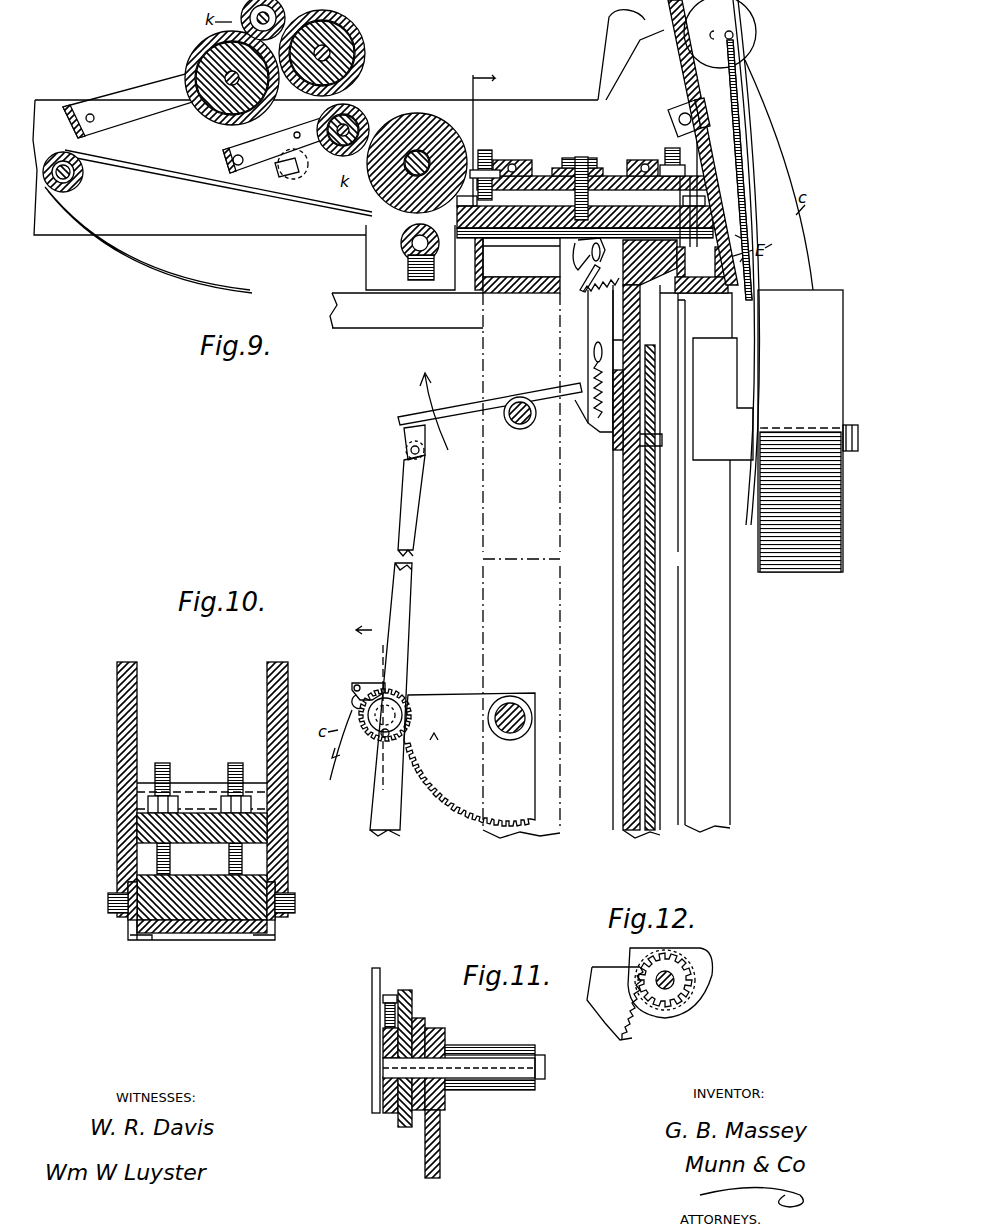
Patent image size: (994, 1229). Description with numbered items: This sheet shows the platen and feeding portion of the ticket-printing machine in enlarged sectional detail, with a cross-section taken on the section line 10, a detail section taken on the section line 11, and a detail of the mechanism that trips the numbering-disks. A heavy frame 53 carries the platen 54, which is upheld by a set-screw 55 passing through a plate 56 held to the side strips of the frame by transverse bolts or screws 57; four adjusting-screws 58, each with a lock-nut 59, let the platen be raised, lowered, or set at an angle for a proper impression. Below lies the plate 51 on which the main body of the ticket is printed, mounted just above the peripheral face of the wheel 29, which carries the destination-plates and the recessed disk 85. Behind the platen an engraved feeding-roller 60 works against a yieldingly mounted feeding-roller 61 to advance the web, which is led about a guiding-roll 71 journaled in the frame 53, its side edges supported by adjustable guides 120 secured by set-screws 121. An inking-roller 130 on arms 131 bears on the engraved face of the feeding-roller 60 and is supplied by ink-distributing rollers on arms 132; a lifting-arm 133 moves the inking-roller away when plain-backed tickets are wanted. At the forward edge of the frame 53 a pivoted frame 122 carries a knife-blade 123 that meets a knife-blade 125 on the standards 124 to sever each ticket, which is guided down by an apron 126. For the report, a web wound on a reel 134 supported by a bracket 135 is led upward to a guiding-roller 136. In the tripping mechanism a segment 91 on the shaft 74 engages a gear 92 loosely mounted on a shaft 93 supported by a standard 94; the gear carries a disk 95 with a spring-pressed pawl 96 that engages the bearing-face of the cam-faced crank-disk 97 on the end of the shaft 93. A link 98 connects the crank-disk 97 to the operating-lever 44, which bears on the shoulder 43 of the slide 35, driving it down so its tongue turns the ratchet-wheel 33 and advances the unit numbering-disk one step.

In FIG. 9, the section line 10 is at (477, 173).
In FIG. 9, the section line 11 is at (375, 713).
In FIG. 9, the wheel 29 is at (640, 314).
In FIG. 9, the ratchet-wheel 33 is at (578, 272).
In FIG. 9, the slide 35 is at (600, 361).
In FIG. 9, the shoulder 43 is at (586, 420).
In FIG. 9, the operating-lever 44 is at (490, 411).
In FIG. 9, the plate 51 is at (533, 246).
In FIG. 9, the frame 53 is at (412, 104).
In FIG. 10, the frame 53 is at (267, 700).
In FIG. 9, the platen 54 is at (585, 213).
In FIG. 10, the platen 54 is at (196, 878).
In FIG. 9, the set-screw 55 is at (574, 198).
In FIG. 9, the plate 56 is at (548, 166).
In FIG. 10, the plate 56 is at (268, 834).
In FIG. 9, the transverse bolts or screws 57 is at (516, 160).
In FIG. 9, the adjusting-screws 58 is at (487, 150).
In FIG. 10, the adjusting-screws 58 is at (228, 772).
In FIG. 9, the lock-nut 59 is at (685, 170).
In FIG. 10, the lock-nut 59 is at (221, 806).
In FIG. 9, the feeding-roller 60 is at (435, 125).
In FIG. 9, the feeding-roller 61 is at (405, 258).
In FIG. 9, the guiding-roll 71 is at (83, 182).
In FIG. 9, the shaft 74 is at (513, 700).
In FIG. 9, the disk 85 is at (655, 690).
In FIG. 9, the segment 91 is at (469, 759).
In FIG. 12, the segment 91 is at (641, 995).
In FIG. 11, the gear 92 is at (425, 1020).
In FIG. 12, the gear 92 is at (700, 985).
In FIG. 11, the shaft 93 is at (495, 1057).
In FIG. 12, the shaft 93 is at (664, 990).
In FIG. 11, the standard 94 is at (440, 1145).
In FIG. 9, the disk 95 is at (402, 697).
In FIG. 11, the disk 95 is at (408, 990).
In FIG. 12, the disk 95 is at (695, 960).
In FIG. 9, the spring-pressed pawl 96 is at (368, 683).
In FIG. 11, the spring-pressed pawl 96 is at (392, 995).
In FIG. 9, the cam-faced crank-disk 97 is at (368, 723).
In FIG. 11, the cam-faced crank-disk 97 is at (383, 1046).
In FIG. 9, the link 98 is at (420, 515).
In FIG. 11, the link 98 is at (372, 980).
In FIG. 10, the adjustable guides 120 is at (130, 938).
In FIG. 10, the set-screws 121 is at (108, 903).
In FIG. 9, the frame 122 is at (715, 135).
In FIG. 9, the knife-blade 123 is at (740, 222).
In FIG. 9, the standards 124 is at (672, 88).
In FIG. 9, the knife-blade 125 is at (680, 40).
In FIG. 9, the apron 126 is at (756, 354).
In FIG. 9, the inking-roller 130 is at (365, 105).
In FIG. 9, the arms 131 is at (279, 144).
In FIG. 9, the arms 132 is at (135, 104).
In FIG. 9, the lifting-arm 133 is at (288, 170).
In FIG. 9, the reel 134 is at (808, 431).
In FIG. 9, the bracket 135 is at (723, 399).
In FIG. 9, the guiding-roller 136 is at (737, 20).